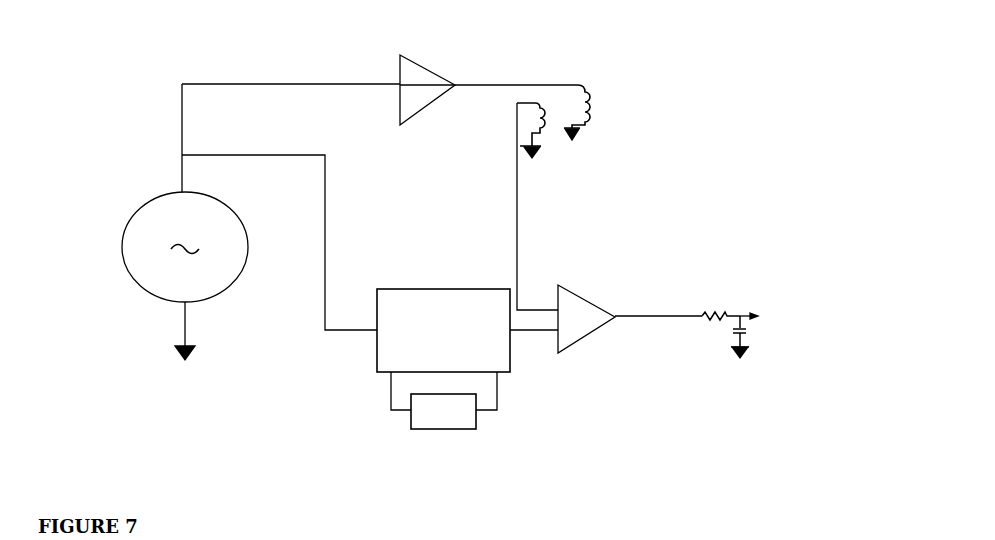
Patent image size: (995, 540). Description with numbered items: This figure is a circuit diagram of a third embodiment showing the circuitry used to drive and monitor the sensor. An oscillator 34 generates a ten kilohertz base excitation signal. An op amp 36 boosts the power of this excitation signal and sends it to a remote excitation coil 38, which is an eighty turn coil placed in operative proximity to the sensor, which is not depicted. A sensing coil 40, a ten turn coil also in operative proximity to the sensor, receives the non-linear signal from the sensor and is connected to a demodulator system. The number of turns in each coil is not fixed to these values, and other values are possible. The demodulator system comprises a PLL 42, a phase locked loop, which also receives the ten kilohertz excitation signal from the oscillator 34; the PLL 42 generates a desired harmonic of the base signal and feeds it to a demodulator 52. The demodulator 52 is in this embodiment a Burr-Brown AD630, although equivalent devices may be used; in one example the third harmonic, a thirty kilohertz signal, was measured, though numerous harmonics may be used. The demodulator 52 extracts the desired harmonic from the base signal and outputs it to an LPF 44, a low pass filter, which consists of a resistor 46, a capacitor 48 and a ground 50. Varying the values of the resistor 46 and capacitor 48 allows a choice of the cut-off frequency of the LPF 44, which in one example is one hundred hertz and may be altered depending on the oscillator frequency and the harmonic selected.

The oscillator 34 is at (122, 262).
The op amp 36 is at (402, 56).
The excitation coil 38 is at (590, 100).
The sensing coil 40 is at (541, 134).
The PLL 42 is at (445, 289).
The LPF 44 is at (752, 312).
The resistor 46 is at (705, 313).
The capacitor 48 is at (745, 331).
The ground 50 is at (745, 360).
The demodulator 52 is at (577, 341).